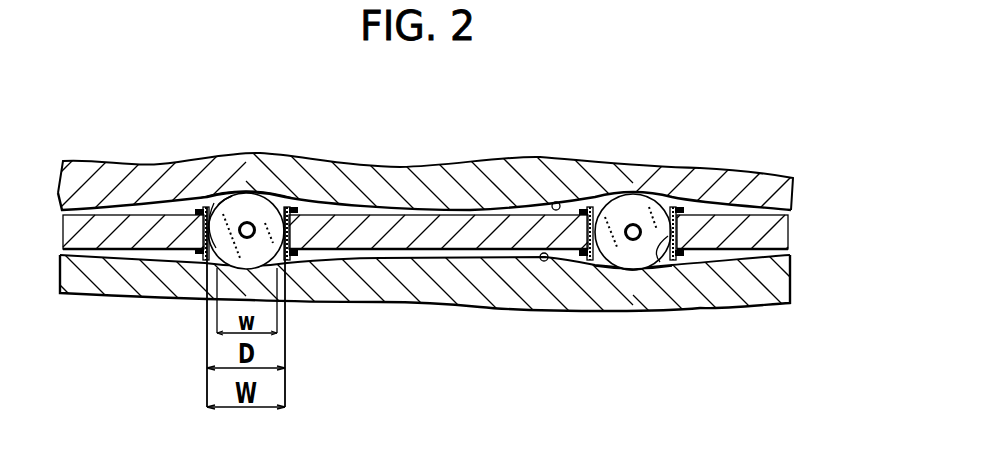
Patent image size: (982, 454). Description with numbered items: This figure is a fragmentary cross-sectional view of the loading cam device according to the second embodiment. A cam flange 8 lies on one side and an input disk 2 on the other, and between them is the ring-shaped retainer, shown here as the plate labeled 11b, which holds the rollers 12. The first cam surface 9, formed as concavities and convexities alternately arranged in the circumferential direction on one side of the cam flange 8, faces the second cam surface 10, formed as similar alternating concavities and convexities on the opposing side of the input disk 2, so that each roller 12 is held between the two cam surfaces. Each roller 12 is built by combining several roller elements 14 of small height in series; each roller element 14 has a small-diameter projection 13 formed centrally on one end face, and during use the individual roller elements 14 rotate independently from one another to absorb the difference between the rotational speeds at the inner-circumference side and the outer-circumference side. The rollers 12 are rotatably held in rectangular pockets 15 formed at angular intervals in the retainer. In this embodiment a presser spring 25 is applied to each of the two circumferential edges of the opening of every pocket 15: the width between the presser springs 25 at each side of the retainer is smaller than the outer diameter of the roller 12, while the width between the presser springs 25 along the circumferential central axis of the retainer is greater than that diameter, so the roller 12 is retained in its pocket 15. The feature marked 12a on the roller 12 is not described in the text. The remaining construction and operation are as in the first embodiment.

The input disk 2 is at (748, 280).
The cam flange 8 is at (736, 197).
The first cam surface 9 is at (557, 203).
The second cam surface 10 is at (544, 261).
The intermediate plate 11b is at (770, 233).
The roller 12 is at (247, 200).
The ball surface portion 12a is at (272, 198).
The small-diameter projection 13 is at (252, 222).
The roller element 14 is at (229, 196).
The pocket 15 is at (197, 193).
The presser spring 25 is at (203, 205).